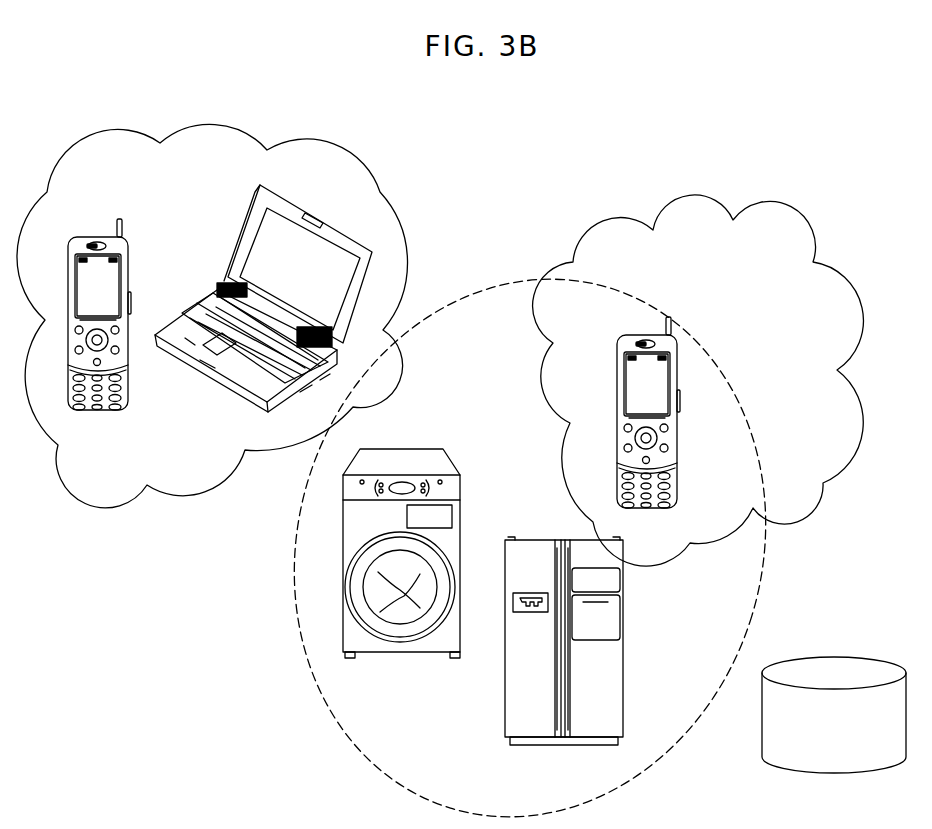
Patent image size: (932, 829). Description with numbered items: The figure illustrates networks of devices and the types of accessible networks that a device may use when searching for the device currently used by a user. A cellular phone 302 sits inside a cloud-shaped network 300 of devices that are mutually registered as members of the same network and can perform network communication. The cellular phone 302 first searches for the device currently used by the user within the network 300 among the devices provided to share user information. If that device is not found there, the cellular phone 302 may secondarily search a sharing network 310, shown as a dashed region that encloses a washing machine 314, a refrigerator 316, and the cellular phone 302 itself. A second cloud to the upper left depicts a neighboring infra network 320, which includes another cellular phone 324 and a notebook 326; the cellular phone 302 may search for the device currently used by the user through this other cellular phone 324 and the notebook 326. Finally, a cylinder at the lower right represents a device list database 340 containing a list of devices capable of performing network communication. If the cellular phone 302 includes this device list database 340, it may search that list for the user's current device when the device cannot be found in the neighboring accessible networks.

The network 300 is at (852, 287).
The cellular phone 302 is at (644, 336).
The sharing network 310 is at (503, 300).
The washing machine 314 is at (418, 448).
The refrigerator 316 is at (535, 538).
The neighboring infra network 320 is at (217, 124).
The another cellular phone 324 is at (100, 237).
The notebook 326 is at (290, 200).
The device list database 340 is at (836, 658).